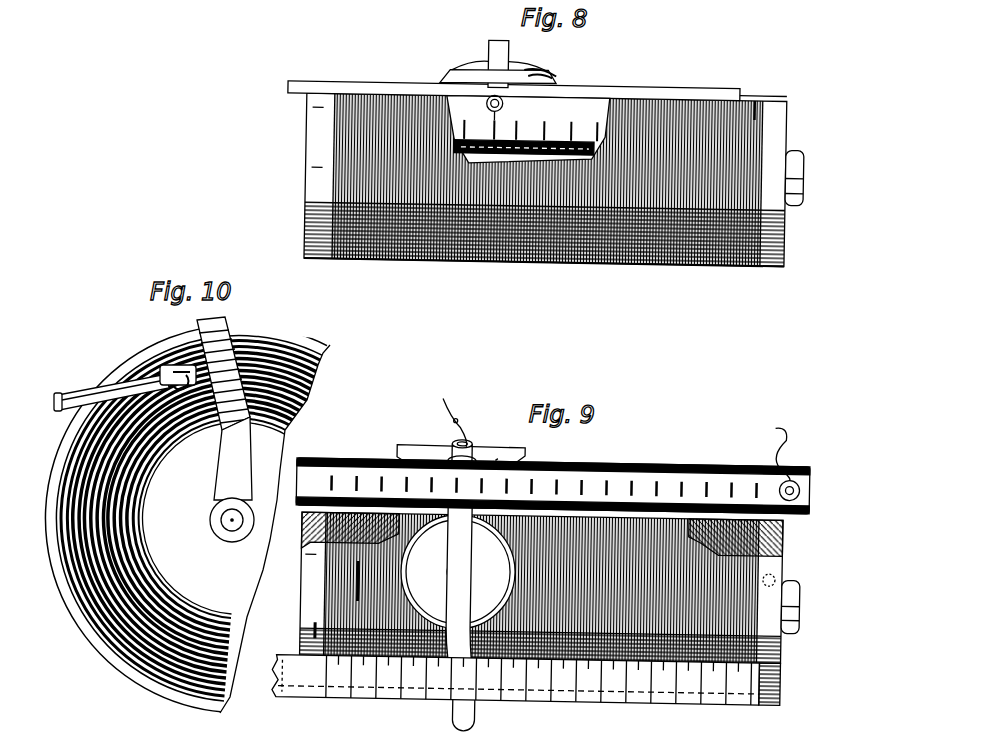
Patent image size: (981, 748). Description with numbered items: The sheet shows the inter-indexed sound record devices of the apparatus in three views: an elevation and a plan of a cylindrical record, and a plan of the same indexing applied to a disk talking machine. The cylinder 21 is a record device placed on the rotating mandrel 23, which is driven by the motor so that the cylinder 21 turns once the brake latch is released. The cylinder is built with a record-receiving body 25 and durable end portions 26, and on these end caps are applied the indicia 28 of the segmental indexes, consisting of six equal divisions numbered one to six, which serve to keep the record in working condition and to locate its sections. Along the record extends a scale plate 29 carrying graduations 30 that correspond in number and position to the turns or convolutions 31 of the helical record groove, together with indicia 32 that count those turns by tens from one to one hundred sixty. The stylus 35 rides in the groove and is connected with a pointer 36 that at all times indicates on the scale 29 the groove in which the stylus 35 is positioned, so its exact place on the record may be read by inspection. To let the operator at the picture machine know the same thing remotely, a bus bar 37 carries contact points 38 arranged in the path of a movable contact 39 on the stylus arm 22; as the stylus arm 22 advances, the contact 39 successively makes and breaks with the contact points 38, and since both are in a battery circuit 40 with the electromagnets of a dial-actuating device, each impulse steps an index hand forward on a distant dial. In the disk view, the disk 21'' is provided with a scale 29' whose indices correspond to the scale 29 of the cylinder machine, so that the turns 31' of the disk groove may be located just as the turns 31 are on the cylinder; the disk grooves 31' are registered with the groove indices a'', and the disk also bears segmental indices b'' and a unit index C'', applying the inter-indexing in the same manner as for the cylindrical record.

In FIG. 8, the cylinder 21 is at (522, 179).
In FIG. 9, the cylinder 21 is at (562, 588).
In FIG. 8, the stylus arm 22 is at (490, 40).
In FIG. 9, the stylus arm 22 is at (440, 450).
In FIG. 8, the mandrel 23 is at (798, 152).
In FIG. 9, the mandrel 23 is at (797, 582).
In FIG. 8, the record-receiving body 25 is at (453, 268).
In FIG. 9, the record-receiving body 25 is at (745, 516).
In FIG. 8, the durable end portions 26 is at (307, 190).
In FIG. 9, the durable end portions 26 is at (303, 598).
In FIG. 8, the indicia of the segmental indexes 28 is at (312, 160).
In FIG. 9, the indicia of the segmental indexes 28 is at (312, 629).
In FIG. 8, the scale plate 29 is at (538, 76).
In FIG. 9, the scale plate 29 is at (525, 691).
In FIG. 9, the graduations 30 is at (410, 672).
In FIG. 8, the turns or convolutions 31 is at (764, 88).
In FIG. 9, the turns or convolutions 31 is at (313, 580).
In FIG. 9, the indicia 32 is at (740, 690).
In FIG. 9, the stylus 35 is at (470, 576).
In FIG. 8, the pointer 36 is at (470, 70).
In FIG. 9, the pointer 36 is at (459, 715).
In FIG. 8, the bus bar 37 is at (560, 125).
In FIG. 9, the bus bar 37 is at (690, 478).
In FIG. 8, the contact points 38 is at (573, 127).
In FIG. 9, the contact points 38 is at (610, 476).
In FIG. 8, the movable contact 39 is at (503, 102).
In FIG. 9, the movable contact 39 is at (474, 457).
In FIG. 9, the battery circuit 40 is at (446, 400).
In FIG. 10, the disk 21'' is at (111, 359).
In FIG. 10, the scale 29' is at (232, 367).
In FIG. 10, the turns 31' is at (191, 517).
In FIG. 10, the groove indices a'' is at (232, 479).
In FIG. 9, the groove indices a'' is at (401, 571).
In FIG. 10, the segmental indices b'' is at (163, 353).
In FIG. 10, the unit index C'' is at (209, 573).